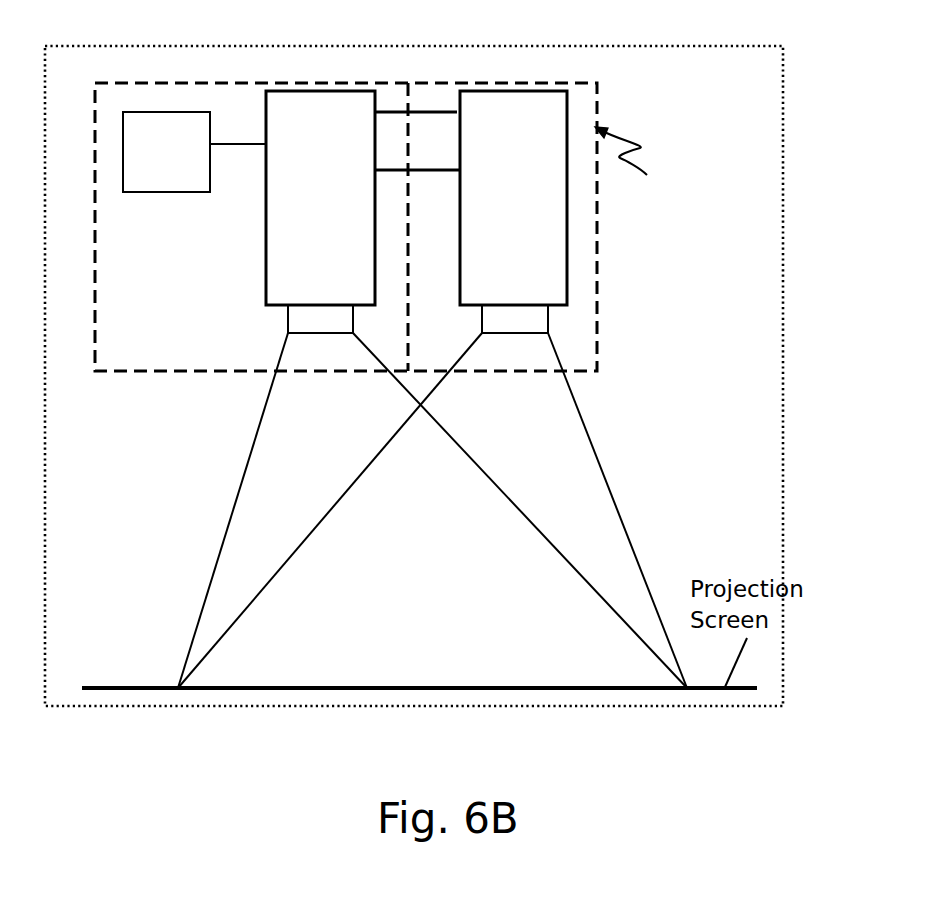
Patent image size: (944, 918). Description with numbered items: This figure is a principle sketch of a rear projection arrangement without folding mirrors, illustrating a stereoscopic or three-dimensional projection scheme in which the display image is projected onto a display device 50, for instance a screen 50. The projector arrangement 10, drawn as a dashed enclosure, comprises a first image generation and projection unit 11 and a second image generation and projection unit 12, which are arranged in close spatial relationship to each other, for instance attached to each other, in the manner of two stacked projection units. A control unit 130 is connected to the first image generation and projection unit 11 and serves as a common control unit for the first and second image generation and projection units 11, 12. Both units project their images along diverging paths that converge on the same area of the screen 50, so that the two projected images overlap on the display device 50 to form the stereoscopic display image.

The display device 50 is at (817, 50).
The projector arrangement 10 is at (202, 375).
The control unit 130 is at (194, 152).
The first image generation and projection unit 11 is at (432, 389).
The second image generation and projection unit 12 is at (432, 389).